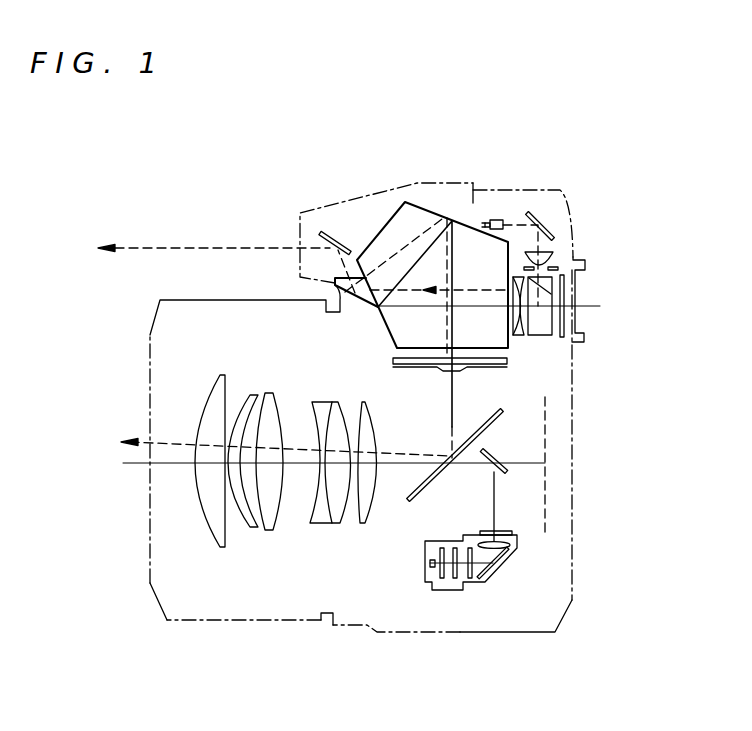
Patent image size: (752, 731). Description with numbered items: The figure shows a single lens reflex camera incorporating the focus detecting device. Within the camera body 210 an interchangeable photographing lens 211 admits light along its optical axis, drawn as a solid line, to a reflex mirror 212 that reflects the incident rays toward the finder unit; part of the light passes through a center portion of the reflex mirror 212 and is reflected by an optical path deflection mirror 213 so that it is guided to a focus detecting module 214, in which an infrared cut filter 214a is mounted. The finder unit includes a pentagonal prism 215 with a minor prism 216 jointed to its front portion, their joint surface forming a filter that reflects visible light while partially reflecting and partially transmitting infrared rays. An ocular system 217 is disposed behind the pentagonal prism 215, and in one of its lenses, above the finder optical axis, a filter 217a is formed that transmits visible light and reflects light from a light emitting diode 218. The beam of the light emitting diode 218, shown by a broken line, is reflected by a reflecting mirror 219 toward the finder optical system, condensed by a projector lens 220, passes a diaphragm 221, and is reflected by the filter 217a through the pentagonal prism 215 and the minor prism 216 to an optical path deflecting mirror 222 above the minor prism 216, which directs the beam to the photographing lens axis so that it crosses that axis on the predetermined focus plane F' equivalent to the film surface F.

The camera body 210 is at (480, 635).
The interchangeable photographing lens 211 is at (283, 623).
The reflex mirror 212 is at (440, 473).
The optical path deflection mirror 213 is at (498, 455).
The focus detecting module 214 is at (477, 587).
The infrared cut filter 214a is at (462, 581).
The pentagonal prism 215 is at (385, 333).
The minor prism 216 is at (341, 305).
The ocular system 217 is at (533, 339).
The filter 217a is at (564, 296).
The light emitting diode 218 is at (504, 216).
The reflecting mirror 219 is at (547, 217).
The projector lens 220 is at (540, 257).
The diaphragm 221 is at (550, 267).
The optical path deflecting mirror 222 is at (333, 228).
The film surface F is at (583, 461).
The predetermined focus plane F' is at (470, 393).